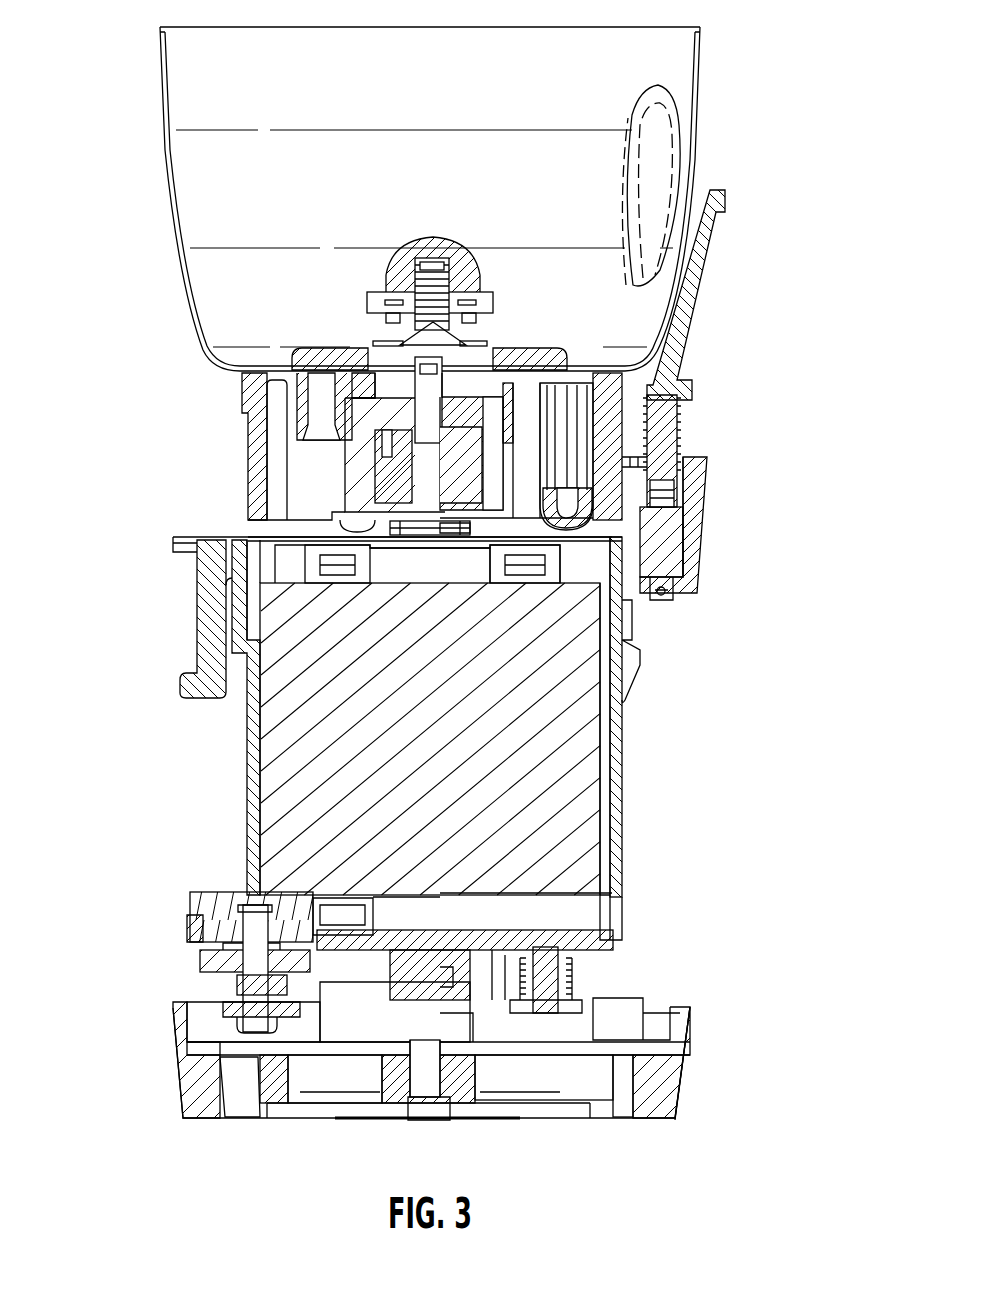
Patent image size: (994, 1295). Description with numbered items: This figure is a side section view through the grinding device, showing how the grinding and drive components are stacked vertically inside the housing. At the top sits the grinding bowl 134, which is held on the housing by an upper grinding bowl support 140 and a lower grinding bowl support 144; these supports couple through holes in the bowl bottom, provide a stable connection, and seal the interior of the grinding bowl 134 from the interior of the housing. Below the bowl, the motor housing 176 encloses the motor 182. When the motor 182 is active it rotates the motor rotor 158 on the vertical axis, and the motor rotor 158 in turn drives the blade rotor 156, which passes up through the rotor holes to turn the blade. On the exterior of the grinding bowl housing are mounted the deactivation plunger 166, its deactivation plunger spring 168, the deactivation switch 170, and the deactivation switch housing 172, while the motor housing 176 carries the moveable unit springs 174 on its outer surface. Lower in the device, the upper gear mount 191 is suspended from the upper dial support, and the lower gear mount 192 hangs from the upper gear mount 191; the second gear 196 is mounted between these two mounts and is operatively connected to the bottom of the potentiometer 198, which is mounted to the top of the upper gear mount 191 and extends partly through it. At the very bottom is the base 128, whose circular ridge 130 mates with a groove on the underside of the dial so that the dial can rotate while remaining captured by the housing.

The grinding bowl 134 is at (700, 77).
The deactivation plunger 166 is at (713, 232).
The blade rotor 156 is at (413, 292).
The motor rotor 158 is at (427, 467).
The upper grinding bowl support 140 is at (600, 334).
The lower grinding bowl support 144 is at (615, 392).
The deactivation plunger spring 168 is at (677, 423).
The deactivation switch 170 is at (670, 553).
The deactivation switch housing 172 is at (697, 517).
The motor housing 176 is at (622, 745).
The motor 182 is at (604, 806).
The potentiometer 198 is at (207, 890).
The upper gear mount 191 is at (185, 922).
The second gear 196 is at (203, 957).
The moveable unit springs 174 is at (378, 978).
The lower gear mount 192 is at (225, 1004).
The circular ridge 130 is at (682, 1003).
The base 128 is at (670, 1083).